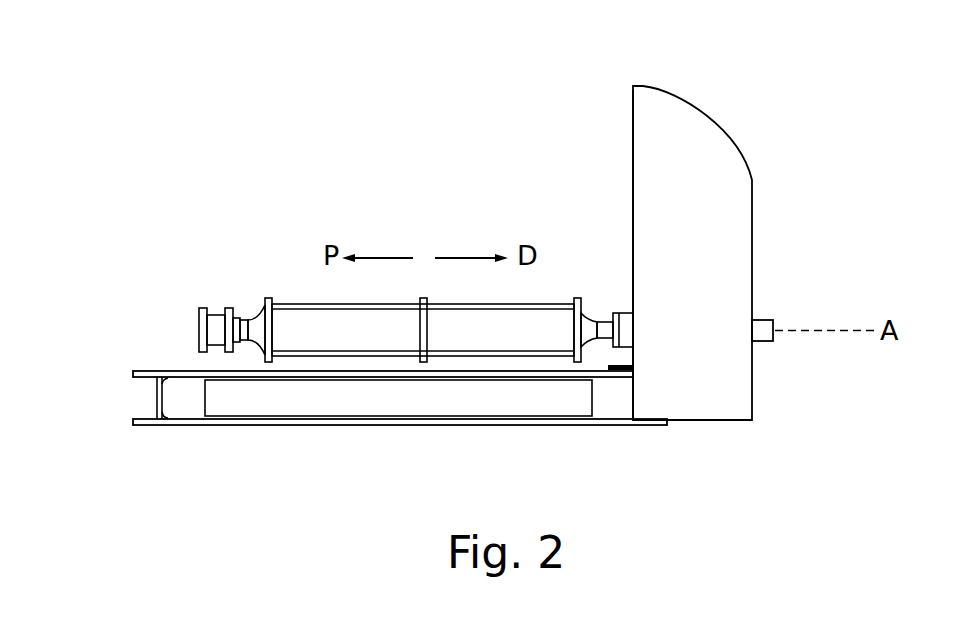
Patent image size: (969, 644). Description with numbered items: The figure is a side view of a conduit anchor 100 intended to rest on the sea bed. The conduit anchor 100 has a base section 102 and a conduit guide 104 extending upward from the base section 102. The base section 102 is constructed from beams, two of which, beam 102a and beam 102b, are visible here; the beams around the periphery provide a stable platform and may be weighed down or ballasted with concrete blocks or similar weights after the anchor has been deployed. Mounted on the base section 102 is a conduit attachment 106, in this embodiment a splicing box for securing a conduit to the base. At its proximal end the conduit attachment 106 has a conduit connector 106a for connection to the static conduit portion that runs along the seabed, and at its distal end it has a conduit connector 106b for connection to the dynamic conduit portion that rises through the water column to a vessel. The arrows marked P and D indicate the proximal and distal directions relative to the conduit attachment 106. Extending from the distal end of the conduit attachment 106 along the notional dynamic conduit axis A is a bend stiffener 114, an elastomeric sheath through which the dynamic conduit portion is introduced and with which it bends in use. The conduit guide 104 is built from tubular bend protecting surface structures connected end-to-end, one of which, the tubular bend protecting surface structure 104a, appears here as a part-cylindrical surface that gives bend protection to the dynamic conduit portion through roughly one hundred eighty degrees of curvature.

The conduit anchor 100 is at (256, 108).
The base section 102 is at (281, 425).
The beam 102a is at (450, 409).
The beam 102b is at (167, 392).
The conduit guide 104 is at (703, 422).
The tubular bend protecting surface structure 104a is at (723, 239).
The conduit attachment 106 is at (318, 304).
The conduit connector 106a is at (198, 316).
The conduit connector 106b is at (602, 316).
The bend stiffener 114 is at (764, 320).